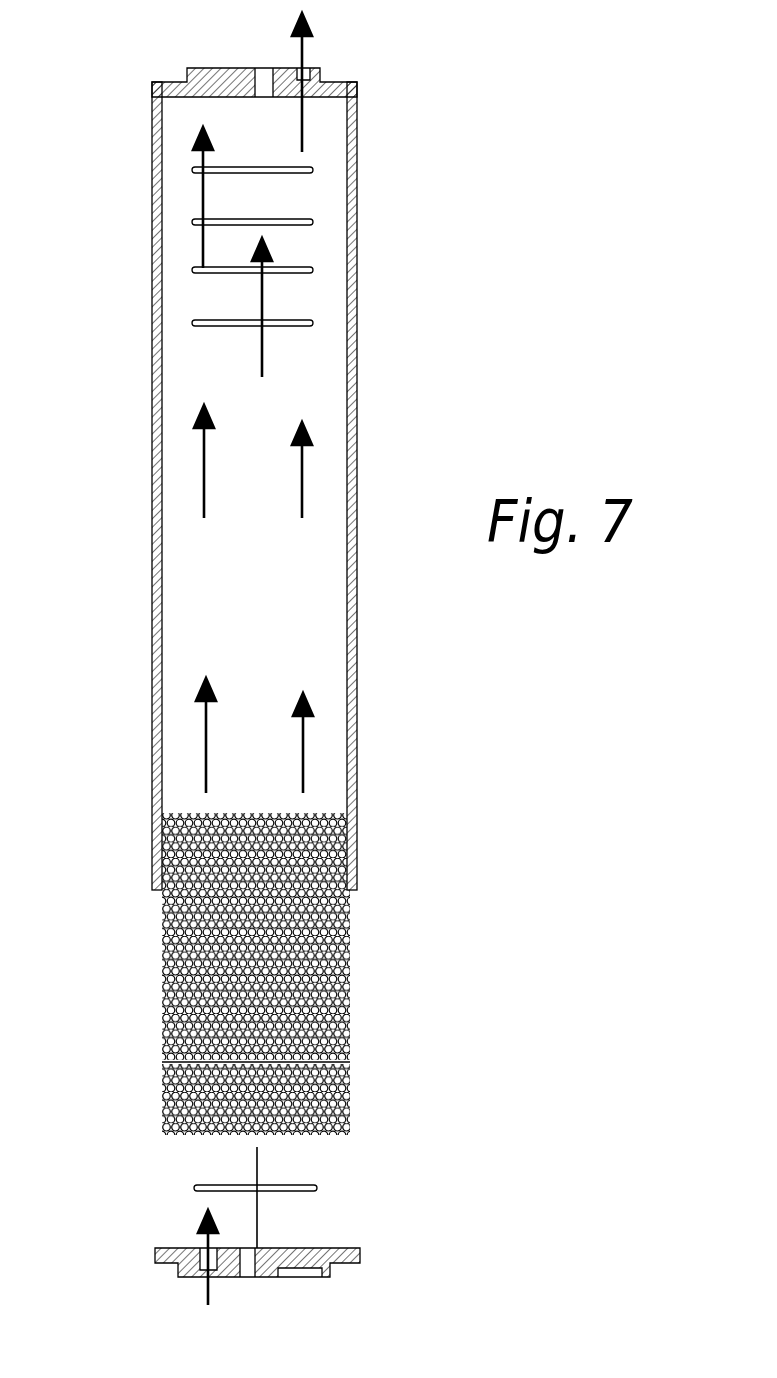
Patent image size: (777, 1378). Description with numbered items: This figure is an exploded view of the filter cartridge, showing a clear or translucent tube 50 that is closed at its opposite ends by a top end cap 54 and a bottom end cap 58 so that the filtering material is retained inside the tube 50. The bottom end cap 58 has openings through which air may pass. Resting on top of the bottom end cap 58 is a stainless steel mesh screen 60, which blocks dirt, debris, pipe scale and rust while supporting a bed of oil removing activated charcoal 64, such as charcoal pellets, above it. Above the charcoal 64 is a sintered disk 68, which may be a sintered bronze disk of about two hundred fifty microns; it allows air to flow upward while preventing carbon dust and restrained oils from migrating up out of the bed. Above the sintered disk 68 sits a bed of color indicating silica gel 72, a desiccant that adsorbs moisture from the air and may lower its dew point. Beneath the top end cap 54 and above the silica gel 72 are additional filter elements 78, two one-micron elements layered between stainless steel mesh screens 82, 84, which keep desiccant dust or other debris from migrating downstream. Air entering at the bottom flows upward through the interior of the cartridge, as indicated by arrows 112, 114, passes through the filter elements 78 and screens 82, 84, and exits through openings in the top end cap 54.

The tube 50 is at (152, 335).
The top end cap 54 is at (178, 80).
The bottom end cap 58 is at (360, 1258).
The mesh screen 60 is at (317, 1188).
The activated charcoal 64 is at (350, 1100).
The sintered disk 68 is at (350, 1058).
The color indicating silica gel 72 is at (350, 927).
The filter elements 78 is at (313, 222).
The mesh screen 82 is at (313, 323).
The mesh screen 84 is at (313, 170).
The arrows 112 is at (303, 750).
The arrows 114 is at (302, 470).